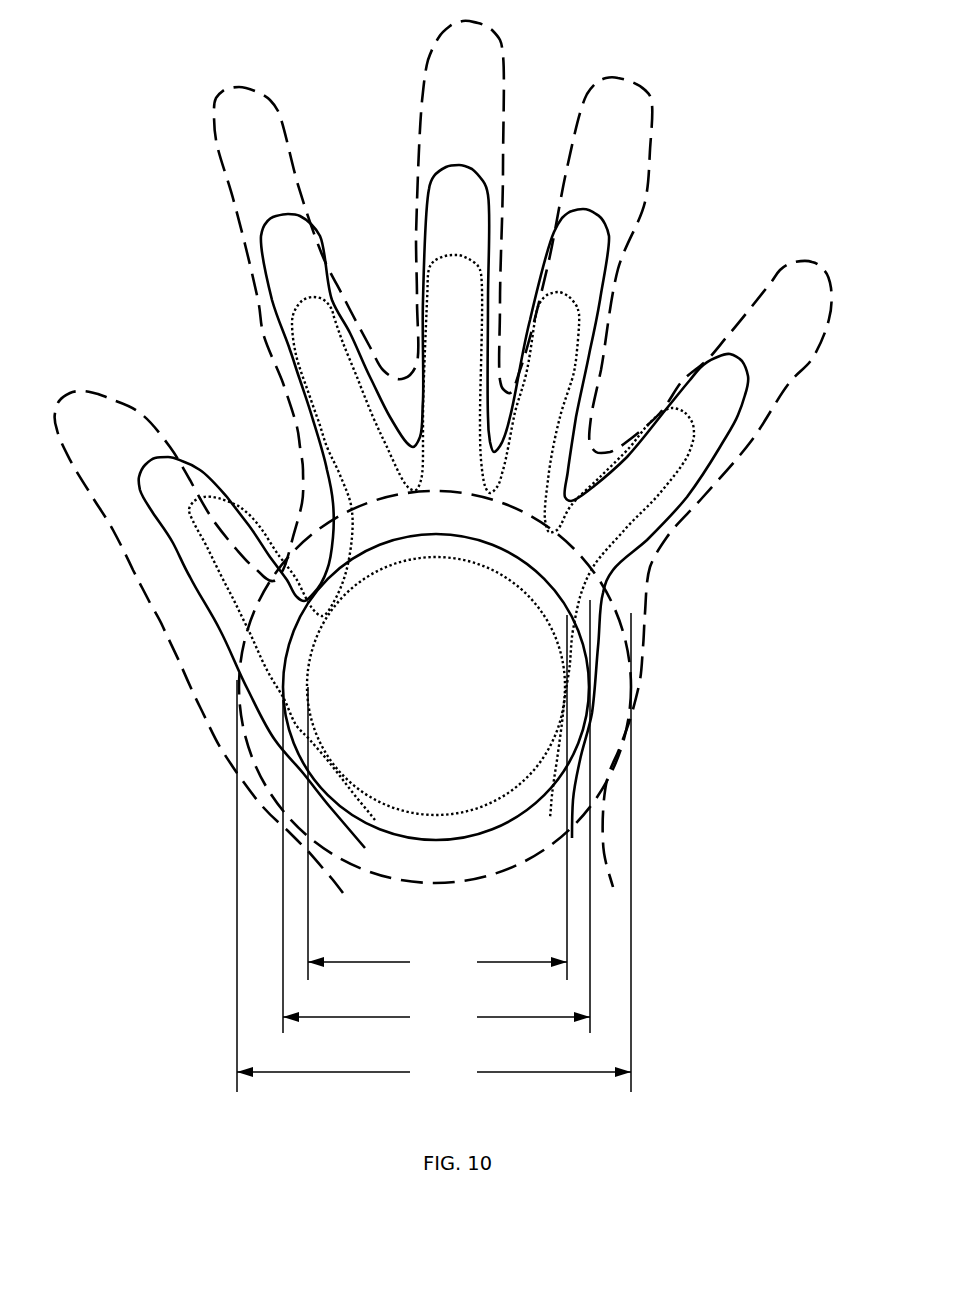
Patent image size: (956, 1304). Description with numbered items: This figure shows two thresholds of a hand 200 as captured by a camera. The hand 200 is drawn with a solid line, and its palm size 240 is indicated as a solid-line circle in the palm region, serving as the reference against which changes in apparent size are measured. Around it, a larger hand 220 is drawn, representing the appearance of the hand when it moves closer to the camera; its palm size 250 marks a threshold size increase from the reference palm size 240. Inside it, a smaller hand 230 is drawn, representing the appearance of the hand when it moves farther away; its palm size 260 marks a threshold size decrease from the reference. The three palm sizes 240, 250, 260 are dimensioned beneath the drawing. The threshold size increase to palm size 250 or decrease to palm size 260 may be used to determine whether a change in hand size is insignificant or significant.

The hand 230 is at (646, 190).
The hand 200 is at (604, 270).
The hand 220 is at (576, 338).
The palm size 240 is at (436, 816).
The palm size 250 is at (434, 852).
The palm size 260 is at (437, 797).